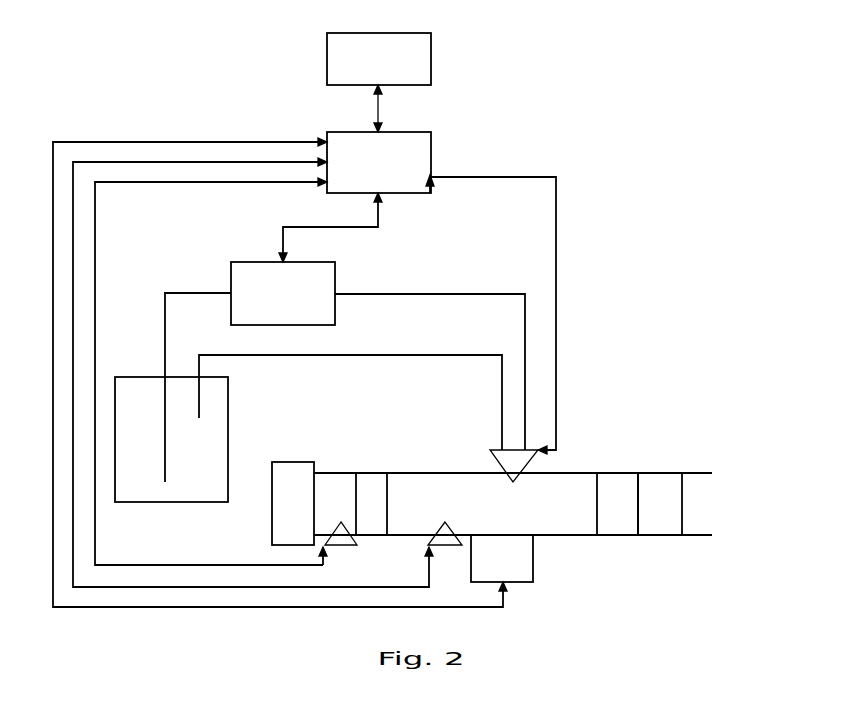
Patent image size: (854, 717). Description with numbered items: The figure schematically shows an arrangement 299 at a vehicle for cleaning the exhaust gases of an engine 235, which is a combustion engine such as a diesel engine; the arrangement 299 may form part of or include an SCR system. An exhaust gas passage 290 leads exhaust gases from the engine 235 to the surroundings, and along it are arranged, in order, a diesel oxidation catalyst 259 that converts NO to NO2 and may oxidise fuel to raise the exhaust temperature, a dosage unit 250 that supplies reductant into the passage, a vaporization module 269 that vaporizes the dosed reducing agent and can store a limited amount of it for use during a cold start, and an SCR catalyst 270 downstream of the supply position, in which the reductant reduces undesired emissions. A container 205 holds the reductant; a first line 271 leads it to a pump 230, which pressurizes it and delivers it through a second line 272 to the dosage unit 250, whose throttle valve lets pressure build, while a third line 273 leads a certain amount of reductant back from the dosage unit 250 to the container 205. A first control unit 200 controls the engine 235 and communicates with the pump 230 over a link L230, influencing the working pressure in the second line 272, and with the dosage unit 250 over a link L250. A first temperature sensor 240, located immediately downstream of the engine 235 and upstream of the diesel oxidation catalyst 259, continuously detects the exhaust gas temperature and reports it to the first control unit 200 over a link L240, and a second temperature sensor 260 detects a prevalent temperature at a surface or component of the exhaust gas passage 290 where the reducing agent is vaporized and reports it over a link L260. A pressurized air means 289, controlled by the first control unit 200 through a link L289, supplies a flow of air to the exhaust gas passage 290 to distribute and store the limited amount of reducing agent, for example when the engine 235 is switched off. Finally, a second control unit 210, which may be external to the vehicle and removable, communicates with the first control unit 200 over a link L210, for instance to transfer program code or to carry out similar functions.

The second control unit 210 is at (364, 70).
The first control unit 200 is at (364, 173).
The link L210 is at (382, 106).
The arrangement 299 is at (502, 80).
The pump 230 is at (268, 303).
The link L230 is at (283, 238).
The link L240 is at (95, 236).
The link L250 is at (556, 223).
The link L260 is at (429, 575).
The link L289 is at (503, 607).
The first line 271 is at (165, 293).
The second line 272 is at (363, 290).
The third line 273 is at (402, 360).
The container 205 is at (228, 438).
The engine 235 is at (278, 513).
The diesel oxidation catalyst 259 is at (378, 468).
The first temperature sensor 240 is at (355, 545).
The second temperature sensor 260 is at (445, 518).
The dosage unit 250 is at (490, 452).
The pressurized air means 289 is at (487, 568).
The exhaust gas passage 290 is at (552, 535).
The vaporization module 269 is at (602, 513).
The SCR catalyst 270 is at (645, 513).